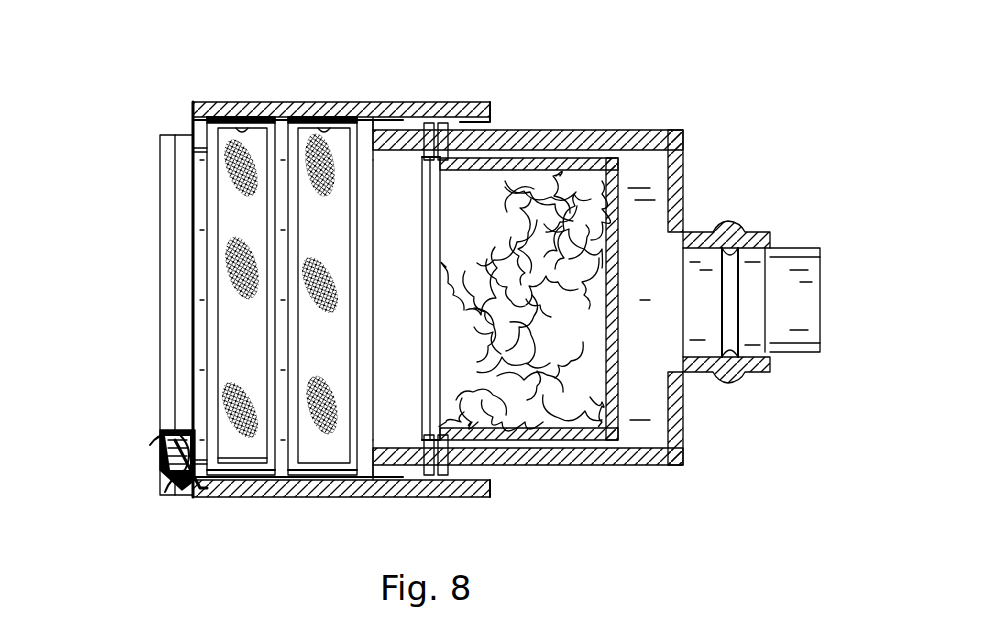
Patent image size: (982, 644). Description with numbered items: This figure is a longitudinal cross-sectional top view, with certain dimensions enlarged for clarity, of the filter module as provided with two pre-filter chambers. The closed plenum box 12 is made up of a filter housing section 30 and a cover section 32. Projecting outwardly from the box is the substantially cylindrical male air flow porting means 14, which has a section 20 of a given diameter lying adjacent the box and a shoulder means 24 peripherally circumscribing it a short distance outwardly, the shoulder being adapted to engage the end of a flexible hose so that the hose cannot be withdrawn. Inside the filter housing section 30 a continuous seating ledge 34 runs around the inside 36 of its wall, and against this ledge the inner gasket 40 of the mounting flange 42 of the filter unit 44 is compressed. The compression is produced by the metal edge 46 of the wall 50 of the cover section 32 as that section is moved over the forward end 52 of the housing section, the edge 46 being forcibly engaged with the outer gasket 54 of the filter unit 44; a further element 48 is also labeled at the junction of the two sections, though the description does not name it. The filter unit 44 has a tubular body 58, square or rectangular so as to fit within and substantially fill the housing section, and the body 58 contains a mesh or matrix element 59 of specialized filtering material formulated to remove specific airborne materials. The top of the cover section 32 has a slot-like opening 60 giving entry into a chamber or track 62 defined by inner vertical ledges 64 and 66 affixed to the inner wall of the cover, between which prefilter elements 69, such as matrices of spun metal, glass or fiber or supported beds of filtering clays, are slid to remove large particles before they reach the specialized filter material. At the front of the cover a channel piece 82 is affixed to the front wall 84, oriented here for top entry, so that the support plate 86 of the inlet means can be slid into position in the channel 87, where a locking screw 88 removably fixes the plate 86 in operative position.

The plenum box 12 is at (628, 514).
The male air flow porting means 14 is at (816, 218).
The section 20 is at (699, 232).
The shoulder means 24 is at (740, 372).
The filter housing section 30 is at (663, 100).
The cover section 32 is at (387, 50).
The seating ledge 34 is at (490, 497).
The inside of wall 36 is at (523, 150).
The inner gasket 40 is at (443, 510).
The mounting flange 42 is at (442, 123).
The filter unit 44 is at (590, 76).
The metal edge 46 is at (438, 452).
The housing joint 48 is at (490, 125).
The wall 50 is at (392, 128).
The forward end 52 is at (410, 222).
The outer gasket 54 is at (418, 156).
The tubular body 58 is at (586, 158).
The mesh or matrix element 59 is at (587, 216).
The slot-like opening 60 is at (215, 171).
The chamber or track 62 is at (258, 117).
The inner vertical ledge 64 is at (198, 493).
The inner vertical ledge 66 is at (228, 490).
The prefilter element 69 is at (222, 292).
The channel piece 82 is at (182, 462).
The front wall 84 is at (172, 135).
The support plate 86 is at (170, 462).
The channel 87 is at (185, 205).
The locking screw 88 is at (158, 434).